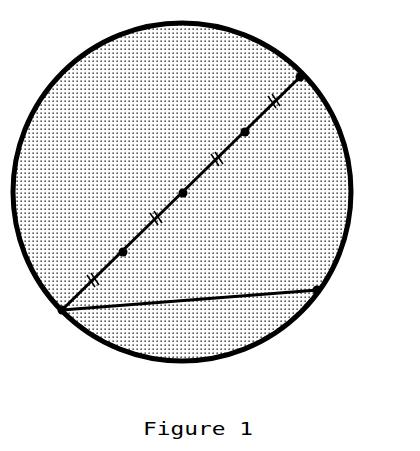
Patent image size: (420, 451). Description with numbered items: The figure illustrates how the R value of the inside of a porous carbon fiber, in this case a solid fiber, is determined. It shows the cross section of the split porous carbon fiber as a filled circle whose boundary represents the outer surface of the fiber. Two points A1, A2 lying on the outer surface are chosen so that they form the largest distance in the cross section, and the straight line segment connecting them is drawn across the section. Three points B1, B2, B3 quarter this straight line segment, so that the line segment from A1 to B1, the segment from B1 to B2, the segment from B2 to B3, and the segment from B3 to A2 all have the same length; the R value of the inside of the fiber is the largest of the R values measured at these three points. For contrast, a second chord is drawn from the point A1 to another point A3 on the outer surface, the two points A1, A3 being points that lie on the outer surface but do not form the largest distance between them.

The point on the outer surface A1 is at (38, 335).
The point on the outer surface A2 is at (334, 57).
The point on the outer surface A3 is at (352, 297).
The quartering point B1 is at (152, 265).
The quartering point B2 is at (215, 210).
The quartering point B3 is at (276, 145).